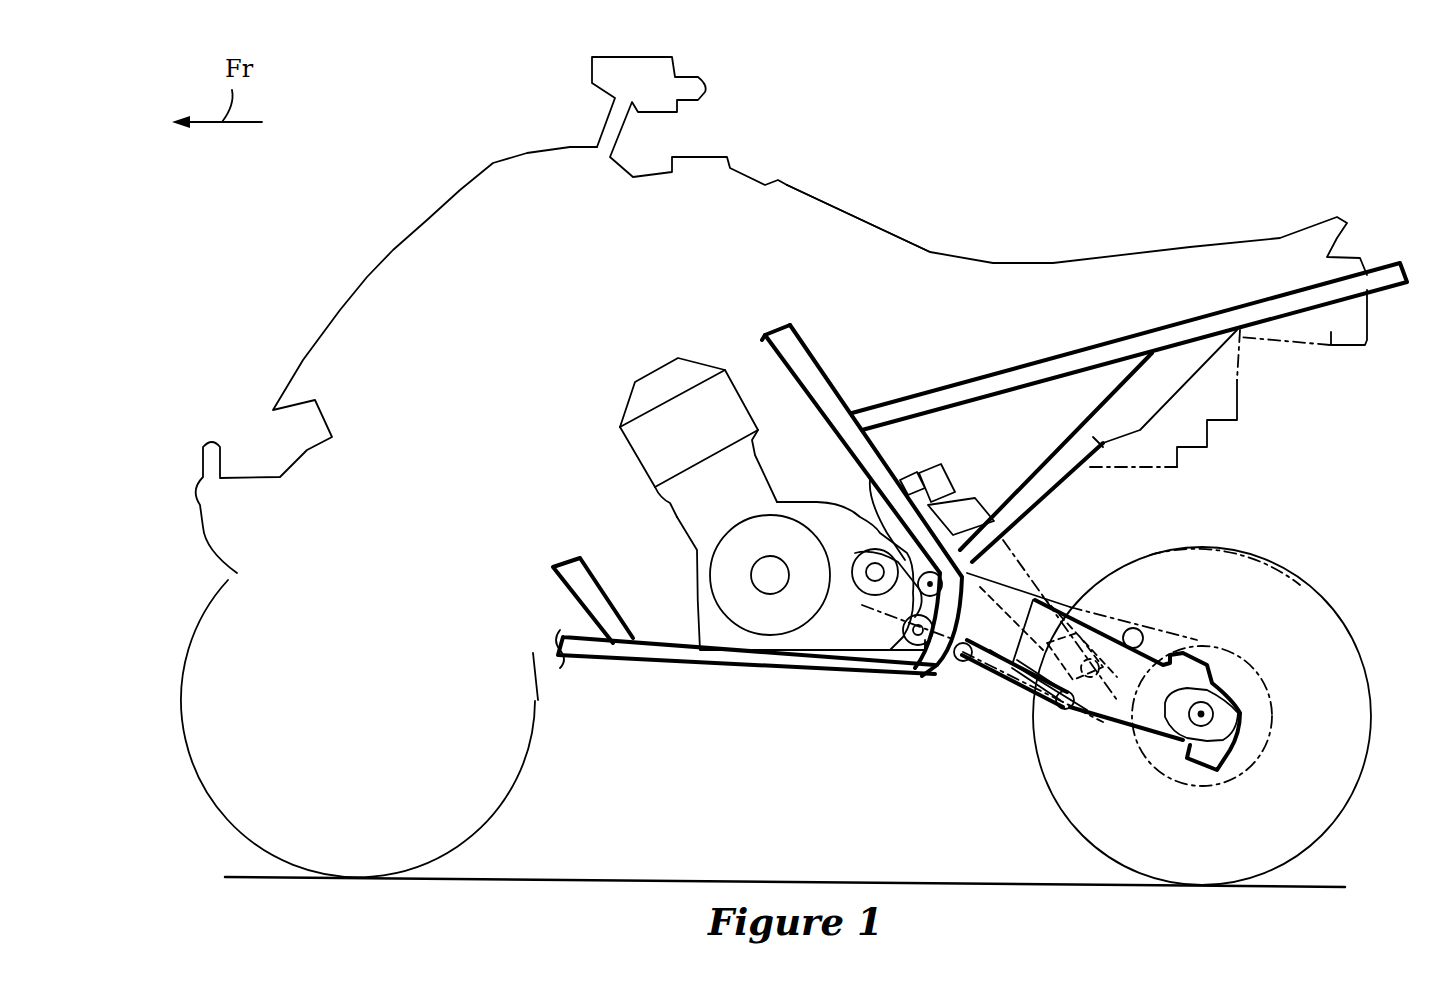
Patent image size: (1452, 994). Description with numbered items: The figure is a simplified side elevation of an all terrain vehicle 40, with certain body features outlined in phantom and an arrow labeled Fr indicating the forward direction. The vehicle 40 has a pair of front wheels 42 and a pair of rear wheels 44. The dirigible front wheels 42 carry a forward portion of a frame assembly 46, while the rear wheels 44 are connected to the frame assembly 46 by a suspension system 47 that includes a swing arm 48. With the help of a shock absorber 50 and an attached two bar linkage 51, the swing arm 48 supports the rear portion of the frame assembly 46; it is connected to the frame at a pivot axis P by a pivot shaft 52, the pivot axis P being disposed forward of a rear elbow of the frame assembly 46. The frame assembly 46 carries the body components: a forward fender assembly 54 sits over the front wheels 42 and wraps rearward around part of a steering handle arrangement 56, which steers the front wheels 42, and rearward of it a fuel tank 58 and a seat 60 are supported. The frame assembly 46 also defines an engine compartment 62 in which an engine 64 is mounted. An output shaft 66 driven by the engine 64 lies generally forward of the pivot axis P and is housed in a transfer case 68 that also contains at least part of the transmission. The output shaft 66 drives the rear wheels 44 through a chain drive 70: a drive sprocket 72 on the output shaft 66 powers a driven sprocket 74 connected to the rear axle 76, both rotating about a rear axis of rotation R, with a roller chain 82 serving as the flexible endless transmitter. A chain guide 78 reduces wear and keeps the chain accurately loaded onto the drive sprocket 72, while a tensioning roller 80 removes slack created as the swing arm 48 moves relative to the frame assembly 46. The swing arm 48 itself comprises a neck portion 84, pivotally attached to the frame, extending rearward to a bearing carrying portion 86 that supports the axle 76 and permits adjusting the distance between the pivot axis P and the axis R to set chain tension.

The vehicle 40 is at (1077, 215).
The front wheels 42 is at (390, 728).
The rear wheels 44 is at (1234, 716).
The frame assembly 46 is at (744, 651).
The suspension system 47 is at (1048, 591).
The swing arm 48 is at (1103, 655).
The shock absorber 50 is at (1056, 457).
The two bar linkage 51 is at (1126, 752).
The pivot shaft 52 is at (942, 690).
The forward fender assembly 54 is at (396, 423).
The steering handle arrangement 56 is at (704, 121).
The fuel tank 58 is at (858, 196).
The seat 60 is at (1227, 306).
The engine compartment 62 is at (698, 398).
The engine 64 is at (752, 565).
The output shaft 66 is at (847, 522).
The transfer case 68 is at (938, 508).
The chain drive 70 is at (1006, 724).
The drive sprocket 72 is at (820, 638).
The driven sprocket 74 is at (1258, 667).
The axle 76 is at (1264, 713).
The chain guide 78 is at (1029, 716).
The tensioning roller 80 is at (886, 690).
The roller chain 82 is at (1225, 550).
The neck portion 84 is at (1169, 603).
The bearing carrying portion 86 is at (1252, 736).
The pivot axis P is at (881, 670).
The rear axis of rotation R is at (1312, 667).